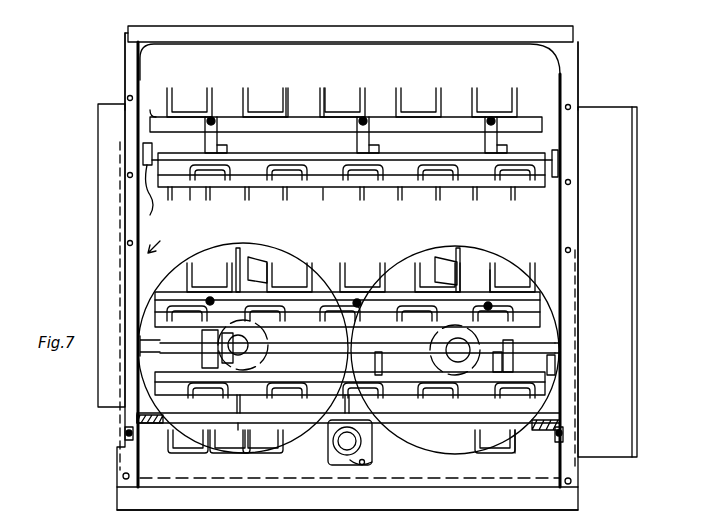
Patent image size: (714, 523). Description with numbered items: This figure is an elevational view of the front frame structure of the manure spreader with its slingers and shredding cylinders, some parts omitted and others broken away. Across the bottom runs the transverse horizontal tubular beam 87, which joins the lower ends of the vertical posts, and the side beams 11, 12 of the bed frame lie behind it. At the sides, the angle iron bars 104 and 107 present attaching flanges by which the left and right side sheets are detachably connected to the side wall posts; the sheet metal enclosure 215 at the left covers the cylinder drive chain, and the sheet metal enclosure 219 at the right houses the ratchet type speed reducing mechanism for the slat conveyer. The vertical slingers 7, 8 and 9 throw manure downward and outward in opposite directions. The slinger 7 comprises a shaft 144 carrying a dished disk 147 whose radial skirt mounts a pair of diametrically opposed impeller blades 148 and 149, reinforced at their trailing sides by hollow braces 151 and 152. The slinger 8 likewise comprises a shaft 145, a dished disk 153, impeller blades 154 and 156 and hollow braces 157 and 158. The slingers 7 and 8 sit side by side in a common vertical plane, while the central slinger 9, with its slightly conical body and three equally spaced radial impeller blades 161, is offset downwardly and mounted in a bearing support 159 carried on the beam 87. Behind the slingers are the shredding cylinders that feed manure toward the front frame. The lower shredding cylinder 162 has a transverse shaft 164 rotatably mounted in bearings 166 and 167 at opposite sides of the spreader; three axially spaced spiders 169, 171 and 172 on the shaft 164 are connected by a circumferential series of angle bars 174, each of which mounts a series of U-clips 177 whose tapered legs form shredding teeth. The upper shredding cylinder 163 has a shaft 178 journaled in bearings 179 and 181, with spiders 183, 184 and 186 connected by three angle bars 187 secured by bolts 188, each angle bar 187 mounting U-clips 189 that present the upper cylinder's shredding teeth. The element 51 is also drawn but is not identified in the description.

The slinger 7 is at (300, 262).
The slinger 8 is at (544, 256).
The central slinger 9 is at (372, 462).
The side beam 11 is at (147, 438).
The side beam 12 is at (555, 440).
The hatched mounting block 51 is at (170, 418).
The transverse horizontal tubular beam 87 is at (163, 505).
The angle iron bar 104 is at (125, 80).
The angle iron bar 107 is at (572, 82).
The shaft 144 is at (250, 346).
The shaft 145 is at (446, 347).
The dished disk 147 is at (318, 285).
The impeller blade 148 is at (238, 248).
The impeller blade 149 is at (262, 453).
The hollow brace 151 is at (257, 262).
The hollow brace 152 is at (225, 453).
The dished disk 153 is at (490, 262).
The impeller blade 154 is at (458, 258).
The impeller blade 156 is at (480, 453).
The hollow brace 157 is at (440, 262).
The hollow brace 158 is at (517, 453).
The bearing support 159 is at (328, 458).
The radial impeller blades 161 is at (330, 413).
The lower shredding cylinder 162 is at (368, 285).
The upper shredding cylinder 163 is at (378, 117).
The transverse shaft 164 is at (203, 355).
The bearing 166 is at (562, 352).
The bearing 167 is at (140, 347).
The spider 169 is at (232, 413).
The spider 171 is at (352, 345).
The spider 172 is at (510, 360).
The angle bars 174 is at (170, 290).
The U-clips 177 is at (190, 265).
The shaft 178 is at (195, 150).
The bearing 179 is at (157, 190).
The bearing 181 is at (555, 190).
The spider 183 is at (220, 145).
The spider 184 is at (372, 142).
The spider 186 is at (500, 142).
The angle bars 187 is at (155, 115).
The bolts 188 is at (240, 113).
The U-clips 189 is at (323, 88).
The sheet metal enclosure 215 is at (98, 247).
The sheet metal enclosure 219 is at (637, 301).